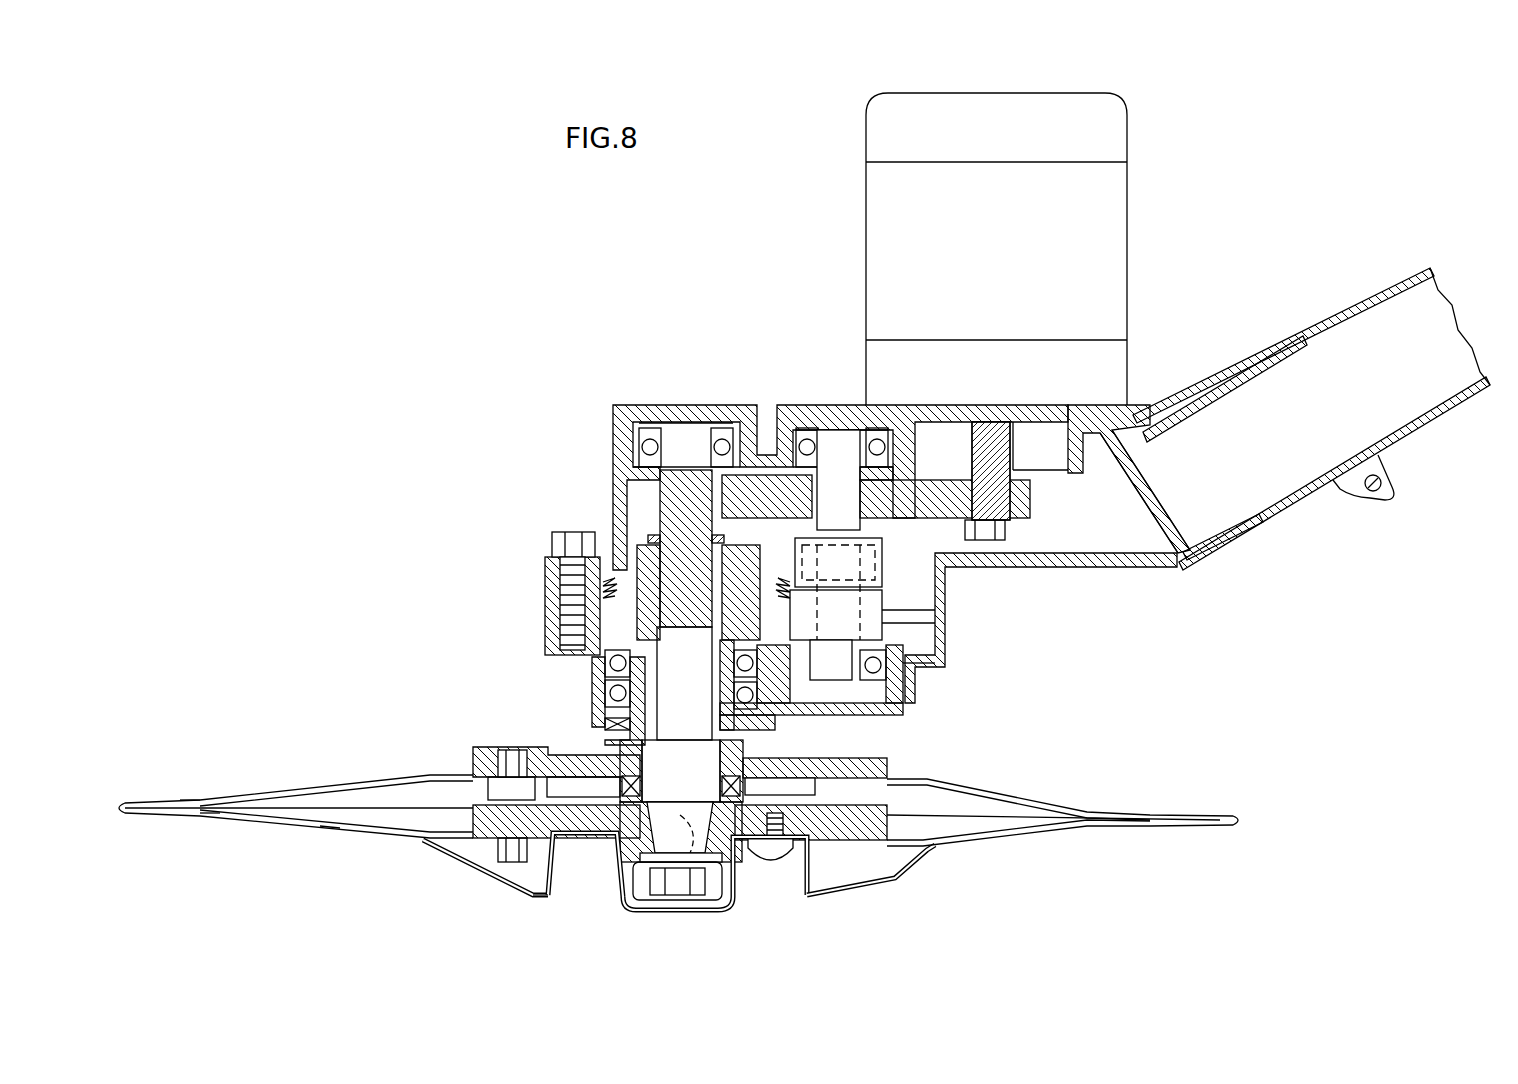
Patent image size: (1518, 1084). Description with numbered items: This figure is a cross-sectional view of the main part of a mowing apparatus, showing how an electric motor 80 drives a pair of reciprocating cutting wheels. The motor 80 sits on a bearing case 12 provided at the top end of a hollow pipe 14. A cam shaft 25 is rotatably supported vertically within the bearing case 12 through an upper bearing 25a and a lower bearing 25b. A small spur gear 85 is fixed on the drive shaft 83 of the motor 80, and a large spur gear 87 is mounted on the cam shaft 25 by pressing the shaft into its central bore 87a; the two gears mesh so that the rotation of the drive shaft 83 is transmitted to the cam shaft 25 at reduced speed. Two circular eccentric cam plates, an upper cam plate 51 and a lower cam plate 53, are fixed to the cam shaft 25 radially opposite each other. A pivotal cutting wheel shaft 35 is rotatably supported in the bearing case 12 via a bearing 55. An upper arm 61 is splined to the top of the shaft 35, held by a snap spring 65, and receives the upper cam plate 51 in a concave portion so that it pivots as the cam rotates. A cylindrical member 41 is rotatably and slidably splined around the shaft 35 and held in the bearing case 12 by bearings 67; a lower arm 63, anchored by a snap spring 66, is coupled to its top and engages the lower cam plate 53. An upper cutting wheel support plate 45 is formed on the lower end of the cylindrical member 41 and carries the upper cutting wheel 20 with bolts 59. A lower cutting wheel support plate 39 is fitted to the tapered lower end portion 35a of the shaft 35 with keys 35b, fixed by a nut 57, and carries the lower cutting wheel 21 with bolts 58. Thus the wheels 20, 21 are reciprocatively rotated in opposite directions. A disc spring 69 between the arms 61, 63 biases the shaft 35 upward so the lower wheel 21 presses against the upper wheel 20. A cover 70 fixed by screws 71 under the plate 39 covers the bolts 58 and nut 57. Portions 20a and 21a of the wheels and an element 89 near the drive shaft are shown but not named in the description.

The bearing case 12 is at (945, 660).
The hollow pipe 14 is at (1362, 300).
The upper cutting wheel 20 is at (343, 777).
The upper blade tip portion 20a is at (186, 800).
The lower cutting wheel 21 is at (342, 838).
The lower blade tip portion 21a is at (213, 812).
The cam shaft 25 is at (775, 437).
The upper bearing 25a is at (790, 432).
The lower bearing 25b is at (905, 680).
The pivotal cutting wheel shaft 35 is at (677, 692).
The tapered lower end portion 35a is at (612, 862).
The keys 35b is at (652, 905).
The lower cutting wheel support plate 39 is at (857, 853).
The cylindrical member 41 is at (548, 610).
The upper cutting wheel support plate 45 is at (880, 768).
The upper cam plate 51 is at (883, 560).
The lower cam plate 53 is at (900, 618).
The bearing 55 is at (613, 422).
The nut 57 is at (705, 890).
The bolts 58 is at (500, 853).
The bolts 59 is at (497, 750).
The upper arm 61 is at (745, 560).
The lower arm 63 is at (792, 680).
The snap spring 65 is at (652, 525).
The snap spring 66 is at (550, 574).
The bearings 67 is at (550, 643).
The disc spring 69 is at (575, 540).
The cover 70 is at (528, 895).
The screws 71 is at (780, 855).
The motor 80 is at (1085, 190).
The drive shaft 83 is at (1000, 432).
The small spur gear 85 is at (1030, 505).
The large spur gear 87 is at (757, 548).
The central bore 87a is at (835, 482).
The nut 89 is at (898, 522).